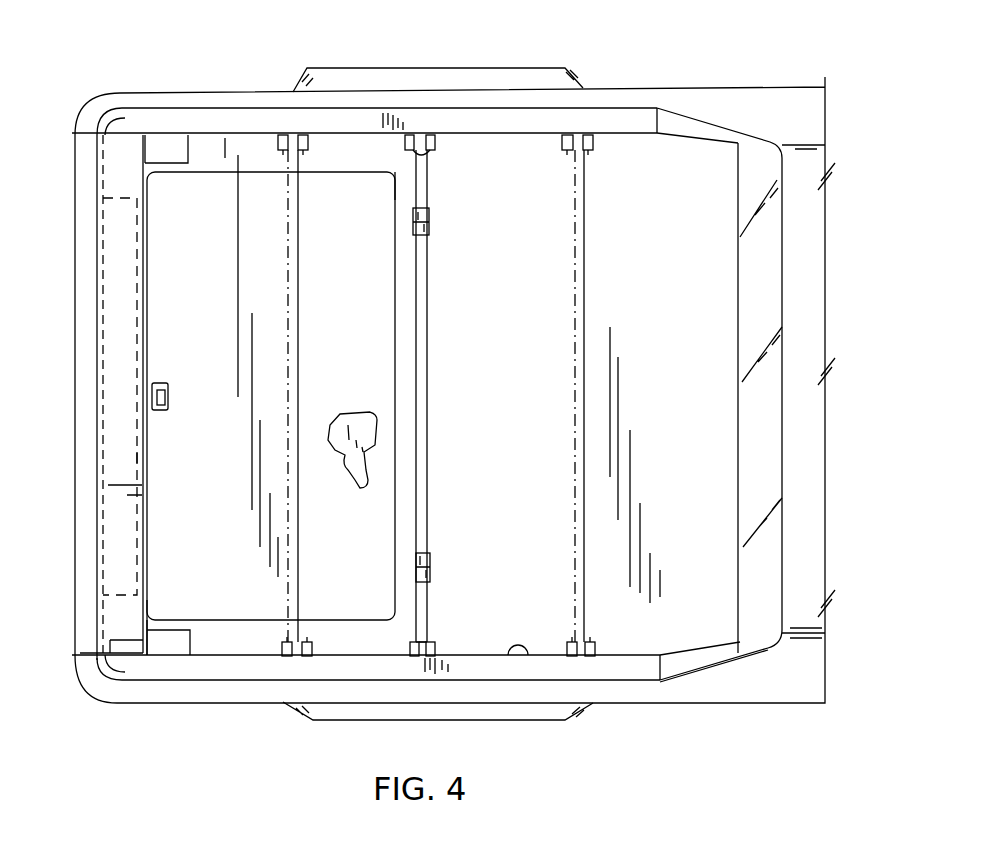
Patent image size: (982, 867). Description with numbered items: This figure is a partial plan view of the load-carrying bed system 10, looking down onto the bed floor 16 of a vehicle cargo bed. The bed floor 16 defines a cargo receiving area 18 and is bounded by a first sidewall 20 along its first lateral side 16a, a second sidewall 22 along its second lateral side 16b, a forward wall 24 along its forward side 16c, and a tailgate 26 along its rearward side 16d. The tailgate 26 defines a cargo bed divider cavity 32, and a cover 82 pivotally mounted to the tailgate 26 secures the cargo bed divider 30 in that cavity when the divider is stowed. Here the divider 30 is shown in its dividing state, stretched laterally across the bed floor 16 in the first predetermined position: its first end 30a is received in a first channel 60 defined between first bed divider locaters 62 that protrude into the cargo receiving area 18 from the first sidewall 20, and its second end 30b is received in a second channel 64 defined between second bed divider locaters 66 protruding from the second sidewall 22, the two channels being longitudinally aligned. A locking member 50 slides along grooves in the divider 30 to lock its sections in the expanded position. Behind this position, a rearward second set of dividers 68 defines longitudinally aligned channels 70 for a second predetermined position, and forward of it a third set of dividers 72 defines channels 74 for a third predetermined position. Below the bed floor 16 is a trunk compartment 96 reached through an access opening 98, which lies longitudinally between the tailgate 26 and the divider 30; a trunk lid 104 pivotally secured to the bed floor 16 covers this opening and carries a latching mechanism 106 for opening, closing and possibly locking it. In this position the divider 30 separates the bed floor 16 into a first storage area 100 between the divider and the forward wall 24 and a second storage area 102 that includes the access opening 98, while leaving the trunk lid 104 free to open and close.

The load-carrying bed system 10 is at (248, 750).
The bed floor 16 is at (677, 322).
The first lateral side 16a is at (480, 140).
The second lateral side 16b is at (632, 655).
The forward side 16c is at (740, 442).
The rearward side 16d is at (145, 172).
The cargo receiving area 18 is at (623, 202).
The first sidewall 20 is at (530, 135).
The second sidewall 22 is at (530, 655).
The forward wall 24 is at (742, 547).
The tailgate 26 is at (82, 428).
The cargo bed divider 30 is at (580, 278).
The first end 30a is at (420, 135).
The second end 30b is at (425, 655).
The cargo bed divider cavity 32 is at (133, 298).
The locking member 50 is at (430, 220).
The first channel 60 is at (433, 135).
The first bed divider locaters 62 is at (397, 174).
The second channel 64 is at (420, 650).
The second bed divider locaters 66 is at (408, 640).
The second set of dividers 68 is at (303, 152).
The channels 70 is at (290, 140).
The third set of dividers 72 is at (587, 155).
The channels 74 is at (577, 138).
The cover 82 is at (140, 460).
The trunk compartment 96 is at (367, 432).
The access opening 98 is at (200, 620).
The first storage area 100 is at (648, 605).
The second storage area 102 is at (225, 592).
The trunk lid 104 is at (380, 318).
The latching mechanism 106 is at (162, 387).